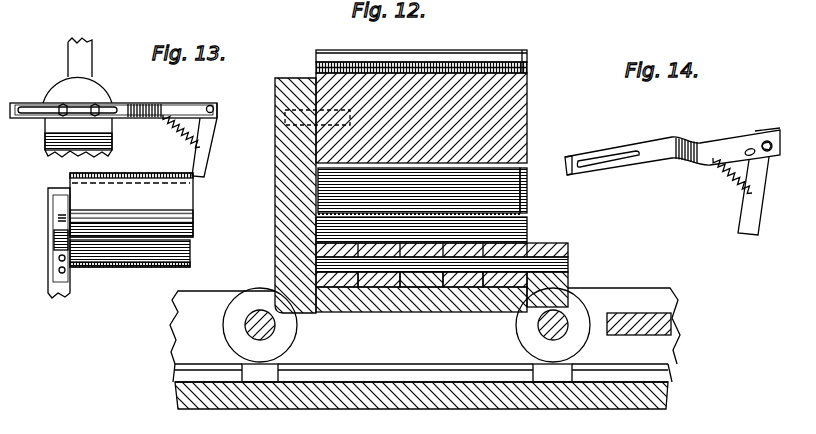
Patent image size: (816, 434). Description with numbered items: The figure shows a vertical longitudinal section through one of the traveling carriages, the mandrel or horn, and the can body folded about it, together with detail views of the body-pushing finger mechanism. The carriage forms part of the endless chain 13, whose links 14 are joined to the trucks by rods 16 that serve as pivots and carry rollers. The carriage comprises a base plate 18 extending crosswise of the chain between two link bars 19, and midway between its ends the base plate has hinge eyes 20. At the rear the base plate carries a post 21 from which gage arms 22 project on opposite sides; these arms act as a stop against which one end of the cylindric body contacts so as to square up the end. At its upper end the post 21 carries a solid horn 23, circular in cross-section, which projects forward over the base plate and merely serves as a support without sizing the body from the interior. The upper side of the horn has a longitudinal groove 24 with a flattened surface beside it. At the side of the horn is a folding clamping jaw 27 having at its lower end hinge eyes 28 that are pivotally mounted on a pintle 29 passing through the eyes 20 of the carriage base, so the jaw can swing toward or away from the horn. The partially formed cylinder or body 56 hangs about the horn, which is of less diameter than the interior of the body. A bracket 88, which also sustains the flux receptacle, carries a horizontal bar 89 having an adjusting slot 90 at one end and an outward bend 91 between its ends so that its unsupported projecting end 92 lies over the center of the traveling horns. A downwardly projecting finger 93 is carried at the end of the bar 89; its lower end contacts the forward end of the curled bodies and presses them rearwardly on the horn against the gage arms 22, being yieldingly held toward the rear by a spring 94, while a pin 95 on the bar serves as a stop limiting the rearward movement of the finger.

In FIG. 12, the endless chain 13 is at (663, 327).
In FIG. 12, the links 14 is at (621, 293).
In FIG. 12, the rods 16 is at (255, 323).
In FIG. 12, the base plate 18 is at (387, 308).
In FIG. 12, the link bars 19 is at (421, 372).
In FIG. 12, the hinge eyes 20 is at (552, 235).
In FIG. 12, the post 21 is at (278, 224).
In FIG. 13, the post 21 is at (50, 205).
In FIG. 13, the gage arms 22 is at (65, 225).
In FIG. 12, the horn 23 is at (512, 97).
In FIG. 13, the horn 23 is at (131, 205).
In FIG. 12, the longitudinal groove 24 is at (530, 70).
In FIG. 12, the folding clamping jaw 27 is at (524, 53).
In FIG. 12, the hinge eyes 28 is at (345, 289).
In FIG. 12, the pintle 29 is at (565, 265).
In FIG. 12, the cylinder or body 56 is at (505, 202).
In FIG. 13, the cylinder or body 56 is at (118, 266).
In FIG. 13, the bracket 88 is at (94, 95).
In FIG. 13, the horizontal bar 89 is at (28, 118).
In FIG. 14, the horizontal bar 89 is at (572, 155).
In FIG. 13, the adjusting slot 90 is at (25, 106).
In FIG. 14, the adjusting slot 90 is at (612, 163).
In FIG. 13, the outward bend 91 is at (148, 103).
In FIG. 14, the outward bend 91 is at (693, 141).
In FIG. 13, the projecting end 92 is at (216, 115).
In FIG. 14, the projecting end 92 is at (770, 154).
In FIG. 13, the finger 93 is at (203, 173).
In FIG. 14, the finger 93 is at (747, 220).
In FIG. 13, the spring 94 is at (186, 133).
In FIG. 14, the spring 94 is at (730, 183).
In FIG. 13, the pin 95 is at (207, 105).
In FIG. 14, the pin 95 is at (747, 131).